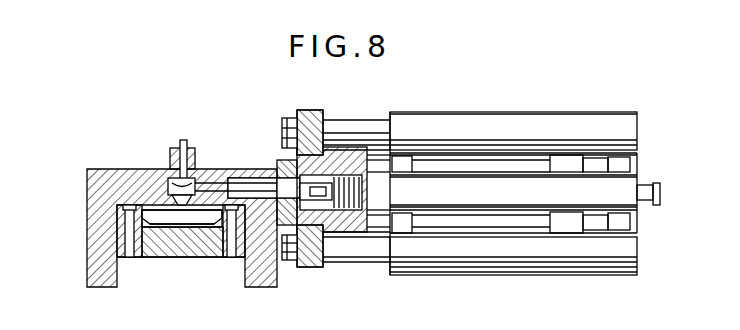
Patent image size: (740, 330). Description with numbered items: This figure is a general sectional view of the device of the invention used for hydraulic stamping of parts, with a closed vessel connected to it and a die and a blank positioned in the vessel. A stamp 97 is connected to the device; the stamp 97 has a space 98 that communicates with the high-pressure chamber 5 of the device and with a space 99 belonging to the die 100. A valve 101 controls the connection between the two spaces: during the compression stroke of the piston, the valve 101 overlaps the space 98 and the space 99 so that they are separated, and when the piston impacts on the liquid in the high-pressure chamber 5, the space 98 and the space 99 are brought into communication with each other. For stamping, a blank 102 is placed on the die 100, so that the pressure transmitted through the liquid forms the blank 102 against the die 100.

The high-pressure chamber 5 is at (350, 218).
The stamp 97 is at (133, 150).
The space 98 is at (215, 188).
The space 99 is at (150, 226).
The die 100 is at (162, 257).
The valve 101 is at (206, 117).
The blank 102 is at (197, 227).